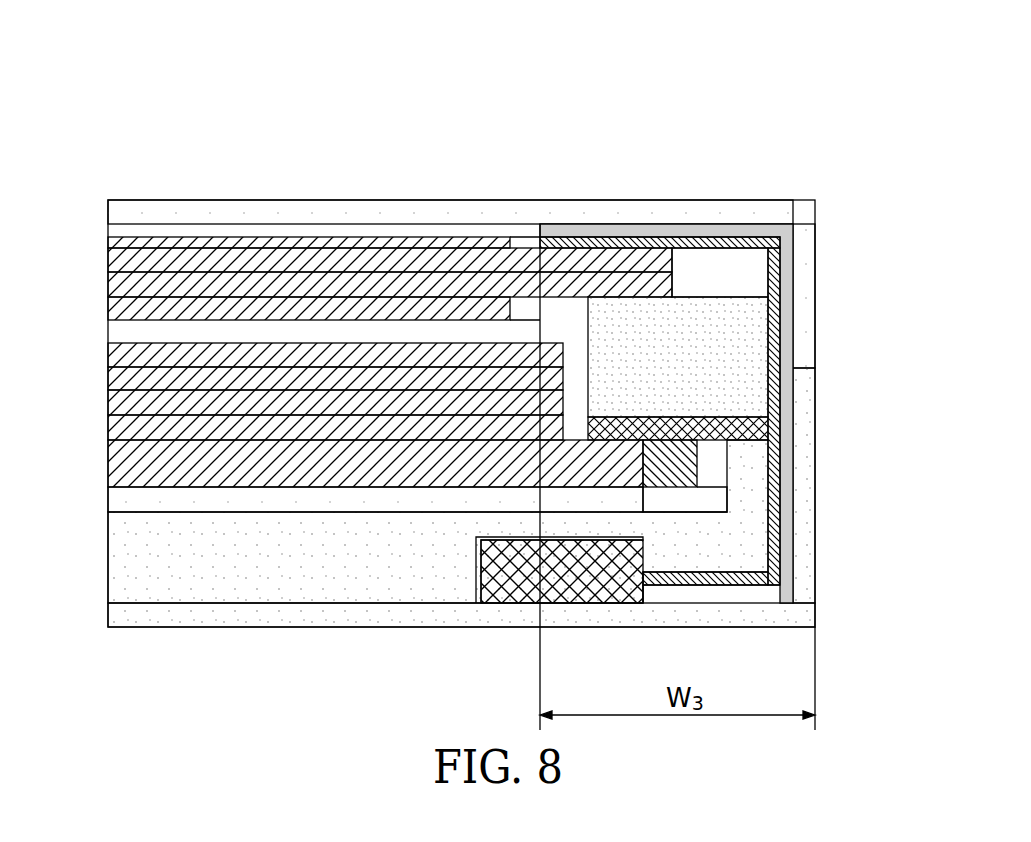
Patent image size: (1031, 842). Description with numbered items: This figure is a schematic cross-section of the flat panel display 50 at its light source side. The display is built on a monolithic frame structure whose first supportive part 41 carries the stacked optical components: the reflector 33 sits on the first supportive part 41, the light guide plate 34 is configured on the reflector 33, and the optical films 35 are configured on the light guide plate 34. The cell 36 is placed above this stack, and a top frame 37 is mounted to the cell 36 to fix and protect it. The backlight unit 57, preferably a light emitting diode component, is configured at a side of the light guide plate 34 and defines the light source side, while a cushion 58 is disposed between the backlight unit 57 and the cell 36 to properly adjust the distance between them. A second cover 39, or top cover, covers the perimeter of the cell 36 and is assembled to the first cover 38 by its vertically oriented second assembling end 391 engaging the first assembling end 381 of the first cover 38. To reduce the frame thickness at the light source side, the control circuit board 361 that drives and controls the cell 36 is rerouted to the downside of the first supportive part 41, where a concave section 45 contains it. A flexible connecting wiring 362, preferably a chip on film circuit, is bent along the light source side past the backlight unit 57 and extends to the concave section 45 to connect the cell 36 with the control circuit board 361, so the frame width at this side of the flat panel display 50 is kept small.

The flat panel display 50 is at (903, 113).
The second cover 39 is at (452, 210).
The second assembling end 391 is at (810, 308).
The first assembling end 381 is at (810, 424).
The first cover 38 is at (767, 618).
The first supportive part 41 is at (135, 580).
The cell 36 is at (306, 287).
The control circuit board 361 is at (522, 593).
The connecting wiring 362 is at (775, 506).
The top frame 37 is at (666, 230).
The optical films 35 is at (218, 430).
The light guide plate 34 is at (288, 468).
The reflector 33 is at (345, 500).
The concave section 45 is at (480, 596).
The backlight unit 57 is at (670, 488).
The cushion 58 is at (713, 305).